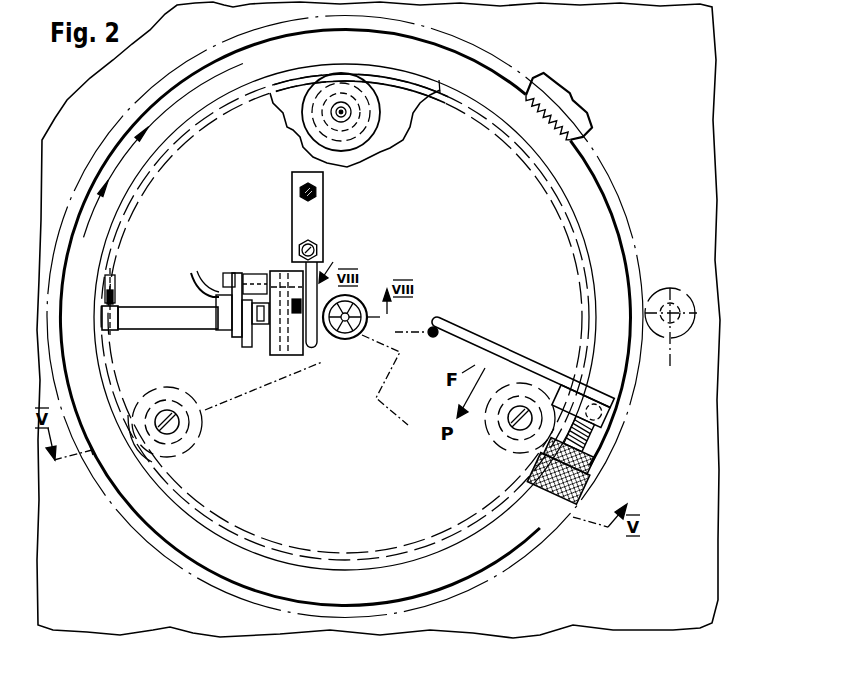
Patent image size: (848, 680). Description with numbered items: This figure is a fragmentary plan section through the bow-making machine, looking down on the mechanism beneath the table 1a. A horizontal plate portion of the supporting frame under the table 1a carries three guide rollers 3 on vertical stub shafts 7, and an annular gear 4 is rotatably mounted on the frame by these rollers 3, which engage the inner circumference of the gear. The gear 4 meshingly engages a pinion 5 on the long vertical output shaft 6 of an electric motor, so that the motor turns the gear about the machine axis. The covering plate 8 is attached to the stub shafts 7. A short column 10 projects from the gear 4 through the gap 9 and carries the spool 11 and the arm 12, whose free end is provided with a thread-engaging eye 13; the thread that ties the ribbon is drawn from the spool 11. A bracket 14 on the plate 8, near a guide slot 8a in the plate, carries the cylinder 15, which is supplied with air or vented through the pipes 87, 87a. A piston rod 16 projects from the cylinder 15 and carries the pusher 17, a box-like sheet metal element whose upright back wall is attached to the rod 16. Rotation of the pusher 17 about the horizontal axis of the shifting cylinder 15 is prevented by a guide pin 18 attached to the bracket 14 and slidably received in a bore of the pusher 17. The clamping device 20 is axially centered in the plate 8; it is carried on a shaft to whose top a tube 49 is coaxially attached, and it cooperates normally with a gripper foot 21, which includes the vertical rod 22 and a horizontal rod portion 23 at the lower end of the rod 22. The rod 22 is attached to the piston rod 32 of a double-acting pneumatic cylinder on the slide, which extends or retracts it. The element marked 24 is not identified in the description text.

The table 1a is at (613, 613).
The guide rollers 3 is at (352, 151).
The annular gear 4 is at (553, 108).
The pinion 5 is at (671, 340).
The output shaft 6 is at (673, 301).
The stub shafts 7 is at (346, 106).
The covering plate 8 is at (465, 92).
The guide slot 8a is at (242, 347).
The gap 9 is at (580, 185).
The column 10 is at (613, 424).
The spool 11 is at (588, 449).
The arm 12 is at (471, 340).
The thread-engaging eye 13 is at (434, 338).
The bracket 14 is at (232, 328).
The cylinder 15 is at (150, 320).
The piston rod 16 is at (257, 330).
The pusher 17 is at (295, 357).
The guide pin 18 is at (256, 273).
The clamping device 20 is at (364, 292).
The gripper foot 21 is at (300, 304).
The vertical rod 22 is at (318, 246).
The horizontal rod portion 23 is at (315, 347).
The plate 24 is at (300, 222).
The piston rod 32 is at (300, 191).
The tube 49 is at (354, 338).
The pipe 87 is at (114, 287).
The pipe 87a is at (192, 271).